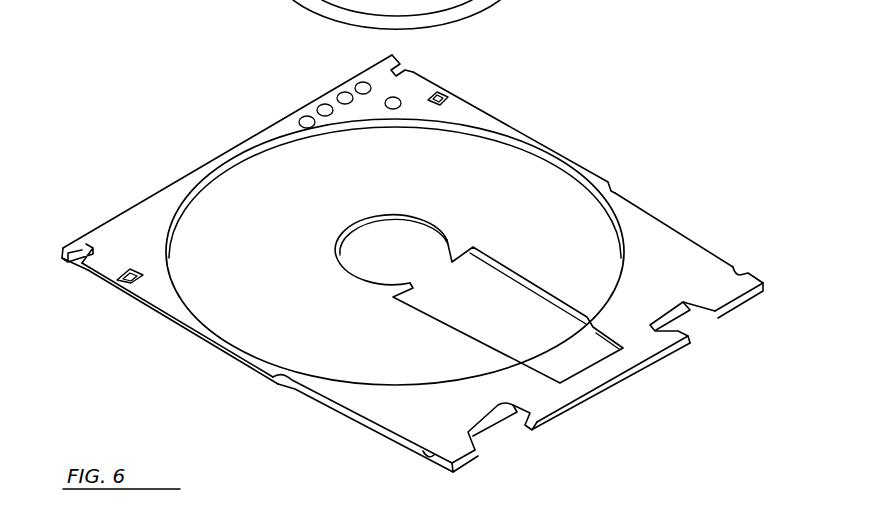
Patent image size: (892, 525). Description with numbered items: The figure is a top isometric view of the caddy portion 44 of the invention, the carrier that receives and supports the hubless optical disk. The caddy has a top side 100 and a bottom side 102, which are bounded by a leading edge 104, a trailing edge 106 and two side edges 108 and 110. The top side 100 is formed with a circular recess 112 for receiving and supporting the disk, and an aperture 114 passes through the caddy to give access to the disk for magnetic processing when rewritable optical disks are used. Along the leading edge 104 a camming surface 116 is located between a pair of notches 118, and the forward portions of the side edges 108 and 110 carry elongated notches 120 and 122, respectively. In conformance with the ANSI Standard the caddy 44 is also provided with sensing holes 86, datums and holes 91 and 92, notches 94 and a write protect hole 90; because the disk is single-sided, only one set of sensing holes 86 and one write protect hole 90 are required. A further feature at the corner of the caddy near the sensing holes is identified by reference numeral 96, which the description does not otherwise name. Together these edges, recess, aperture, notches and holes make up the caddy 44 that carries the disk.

The caddy portion 44 is at (622, 61).
The sensing holes 86 is at (358, 84).
The write protect hole 90 is at (402, 100).
The datums and holes 91 is at (737, 268).
The datums and holes 92 is at (443, 96).
The notches 94 is at (64, 266).
The corner notch 96 is at (403, 68).
The top side 100 is at (155, 207).
The bottom side 102 is at (140, 307).
The leading edge 104 is at (628, 378).
The trailing edge 106 is at (242, 143).
The side edge 108 is at (227, 352).
The side edge 110 is at (518, 132).
The circular recess 112 is at (528, 177).
The aperture 114 is at (470, 334).
The camming surface 116 is at (560, 417).
The notches 118 is at (680, 318).
The elongated notch 120 is at (337, 408).
The elongated notch 122 is at (658, 218).